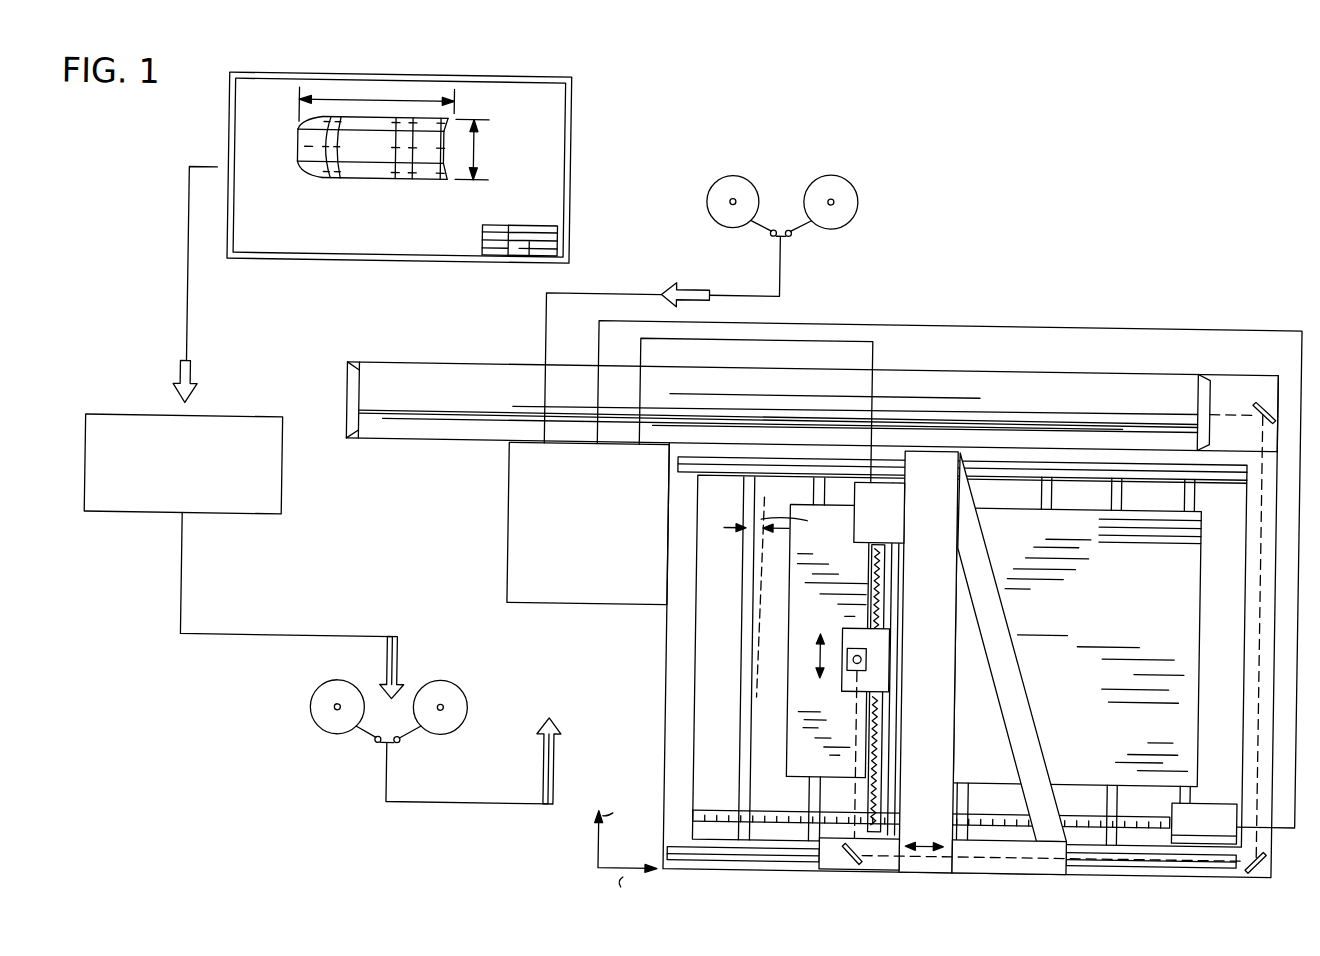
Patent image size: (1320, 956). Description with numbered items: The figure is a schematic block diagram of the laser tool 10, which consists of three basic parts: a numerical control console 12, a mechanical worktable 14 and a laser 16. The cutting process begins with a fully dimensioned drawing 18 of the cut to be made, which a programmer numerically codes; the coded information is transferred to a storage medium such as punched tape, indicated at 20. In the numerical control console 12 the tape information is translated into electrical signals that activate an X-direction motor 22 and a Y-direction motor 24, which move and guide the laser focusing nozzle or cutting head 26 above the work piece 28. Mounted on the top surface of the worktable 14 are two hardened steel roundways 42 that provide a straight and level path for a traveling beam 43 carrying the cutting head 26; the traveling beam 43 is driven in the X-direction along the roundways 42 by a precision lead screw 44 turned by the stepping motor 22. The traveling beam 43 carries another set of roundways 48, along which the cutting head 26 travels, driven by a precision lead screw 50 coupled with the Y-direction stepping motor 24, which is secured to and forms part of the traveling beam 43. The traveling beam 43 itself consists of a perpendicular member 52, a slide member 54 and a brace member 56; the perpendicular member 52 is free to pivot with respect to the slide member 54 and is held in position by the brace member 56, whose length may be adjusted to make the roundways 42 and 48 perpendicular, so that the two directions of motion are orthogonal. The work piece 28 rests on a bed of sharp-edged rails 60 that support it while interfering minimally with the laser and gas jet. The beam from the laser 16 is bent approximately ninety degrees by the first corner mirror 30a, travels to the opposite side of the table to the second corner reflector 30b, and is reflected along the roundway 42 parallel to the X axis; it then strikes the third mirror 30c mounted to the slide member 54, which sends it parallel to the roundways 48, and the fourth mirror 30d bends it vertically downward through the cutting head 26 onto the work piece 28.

The laser tool 10 is at (616, 684).
The numerical control console 12 is at (549, 609).
The mechanical worktable 14 is at (806, 428).
The laser 16 is at (480, 366).
The fully dimensioned drawing 18 is at (555, 110).
The storage medium (punched tape) 20 is at (243, 426).
The X-direction motor 22 is at (1207, 800).
The Y-direction motor 24 is at (877, 515).
The cutting head 26 is at (860, 631).
The work piece 28 is at (1163, 616).
The first corner mirror 30a is at (1250, 401).
The second corner reflector 30b is at (1264, 872).
The third mirror 30c is at (841, 872).
The fourth mirror 30d is at (867, 660).
The hardened steel roundways 42 is at (726, 453).
The traveling beam 43 is at (943, 722).
The precision lead screw 44 is at (1082, 813).
The roundways 48 is at (899, 605).
The precision lead screw 50 is at (881, 584).
The perpendicular member 52 is at (953, 649).
The slide member 54 is at (1031, 875).
The brace member 56 is at (1022, 690).
The sharp-edged rails 60 is at (1180, 497).